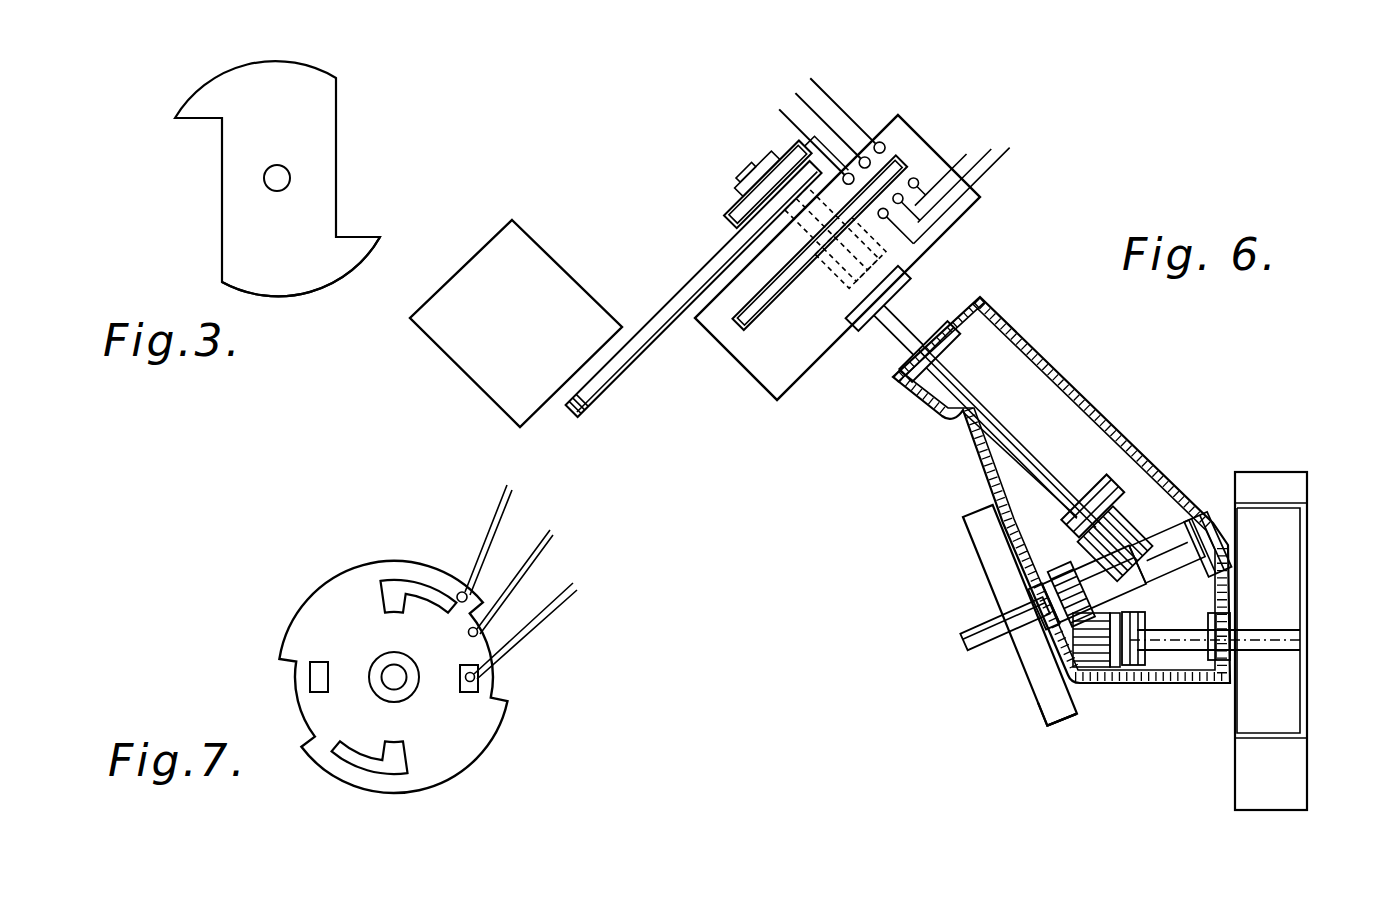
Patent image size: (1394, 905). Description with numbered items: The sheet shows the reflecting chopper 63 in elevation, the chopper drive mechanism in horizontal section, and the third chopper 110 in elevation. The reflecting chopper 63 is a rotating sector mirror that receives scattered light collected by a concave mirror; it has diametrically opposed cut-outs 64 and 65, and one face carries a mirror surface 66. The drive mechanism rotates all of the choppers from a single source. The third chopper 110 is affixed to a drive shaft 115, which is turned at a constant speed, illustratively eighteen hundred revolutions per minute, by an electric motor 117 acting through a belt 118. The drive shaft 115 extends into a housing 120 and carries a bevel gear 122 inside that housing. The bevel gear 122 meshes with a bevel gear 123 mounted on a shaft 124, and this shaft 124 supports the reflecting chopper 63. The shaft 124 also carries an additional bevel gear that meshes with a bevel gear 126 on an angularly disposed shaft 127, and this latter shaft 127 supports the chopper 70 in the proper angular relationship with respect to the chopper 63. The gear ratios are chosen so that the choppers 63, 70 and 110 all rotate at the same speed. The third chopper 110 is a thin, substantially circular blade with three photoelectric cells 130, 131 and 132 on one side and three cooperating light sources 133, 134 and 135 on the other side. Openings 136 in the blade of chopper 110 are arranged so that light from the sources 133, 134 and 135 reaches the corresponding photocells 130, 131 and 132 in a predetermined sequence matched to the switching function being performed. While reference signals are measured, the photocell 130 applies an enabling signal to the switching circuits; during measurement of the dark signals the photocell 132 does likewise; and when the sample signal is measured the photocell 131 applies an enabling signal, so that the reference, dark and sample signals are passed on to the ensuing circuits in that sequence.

In FIG. 3, the reflecting chopper 63 is at (256, 72).
In FIG. 6, the reflecting chopper 63 is at (1038, 714).
In FIG. 3, the cut-out 64 is at (182, 120).
In FIG. 3, the cut-out 65 is at (360, 235).
In FIG. 3, the mirror surface 66 is at (312, 277).
In FIG. 6, the mirror surface 66 is at (1050, 746).
In FIG. 6, the chopper 70 is at (1320, 509).
In FIG. 6, the third chopper 110 is at (740, 300).
In FIG. 7, the third chopper 110 is at (455, 783).
In FIG. 6, the drive shaft 115 is at (886, 335).
In FIG. 6, the electric motor 117 is at (555, 268).
In FIG. 6, the belt 118 is at (625, 370).
In FIG. 6, the housing 120 is at (1080, 398).
In FIG. 6, the bevel gear 122 is at (1143, 510).
In FIG. 6, the bevel gear 123 is at (1112, 597).
In FIG. 3, the shaft 124 is at (290, 176).
In FIG. 6, the shaft 124 is at (985, 640).
In FIG. 6, the bevel gear 126 is at (1082, 720).
In FIG. 6, the angularly disposed shaft 127 is at (1173, 645).
In FIG. 6, the photoelectric cell 130 is at (927, 193).
In FIG. 7, the photoelectric cell 130 is at (462, 590).
In FIG. 6, the photoelectric cell 131 is at (905, 203).
In FIG. 7, the photoelectric cell 131 is at (480, 633).
In FIG. 6, the photoelectric cell 132 is at (890, 218).
In FIG. 7, the photoelectric cell 132 is at (478, 678).
In FIG. 6, the light source 133 is at (796, 163).
In FIG. 6, the light source 134 is at (870, 227).
In FIG. 6, the light source 135 is at (903, 118).
In FIG. 7, the openings 136 is at (403, 596).